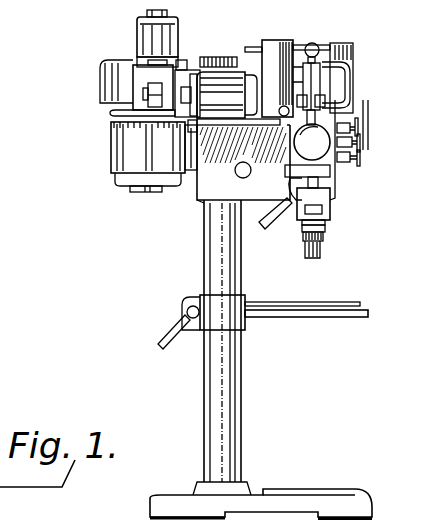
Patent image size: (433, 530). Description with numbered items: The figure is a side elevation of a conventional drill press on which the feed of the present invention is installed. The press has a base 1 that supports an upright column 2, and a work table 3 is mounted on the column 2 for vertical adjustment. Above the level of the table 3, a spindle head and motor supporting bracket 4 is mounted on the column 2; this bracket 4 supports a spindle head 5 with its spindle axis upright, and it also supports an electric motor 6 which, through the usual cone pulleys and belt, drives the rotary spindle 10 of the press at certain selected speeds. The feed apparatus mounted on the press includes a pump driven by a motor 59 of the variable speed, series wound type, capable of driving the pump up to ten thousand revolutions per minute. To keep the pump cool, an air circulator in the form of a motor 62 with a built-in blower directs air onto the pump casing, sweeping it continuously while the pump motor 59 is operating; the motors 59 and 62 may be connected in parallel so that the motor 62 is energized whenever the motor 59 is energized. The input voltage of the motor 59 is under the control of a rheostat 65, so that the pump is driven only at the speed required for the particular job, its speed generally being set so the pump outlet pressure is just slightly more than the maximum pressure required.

The base 1 is at (357, 490).
The column 2 is at (240, 410).
The work table 3 is at (366, 305).
The spindle head and motor supporting bracket 4 is at (197, 200).
The spindle head 5 is at (343, 180).
The electric motor 6 is at (113, 178).
The rotary spindle 10 is at (328, 230).
The motor 59 is at (197, 60).
The motor 62 is at (143, 17).
The rheostat 65 is at (280, 40).